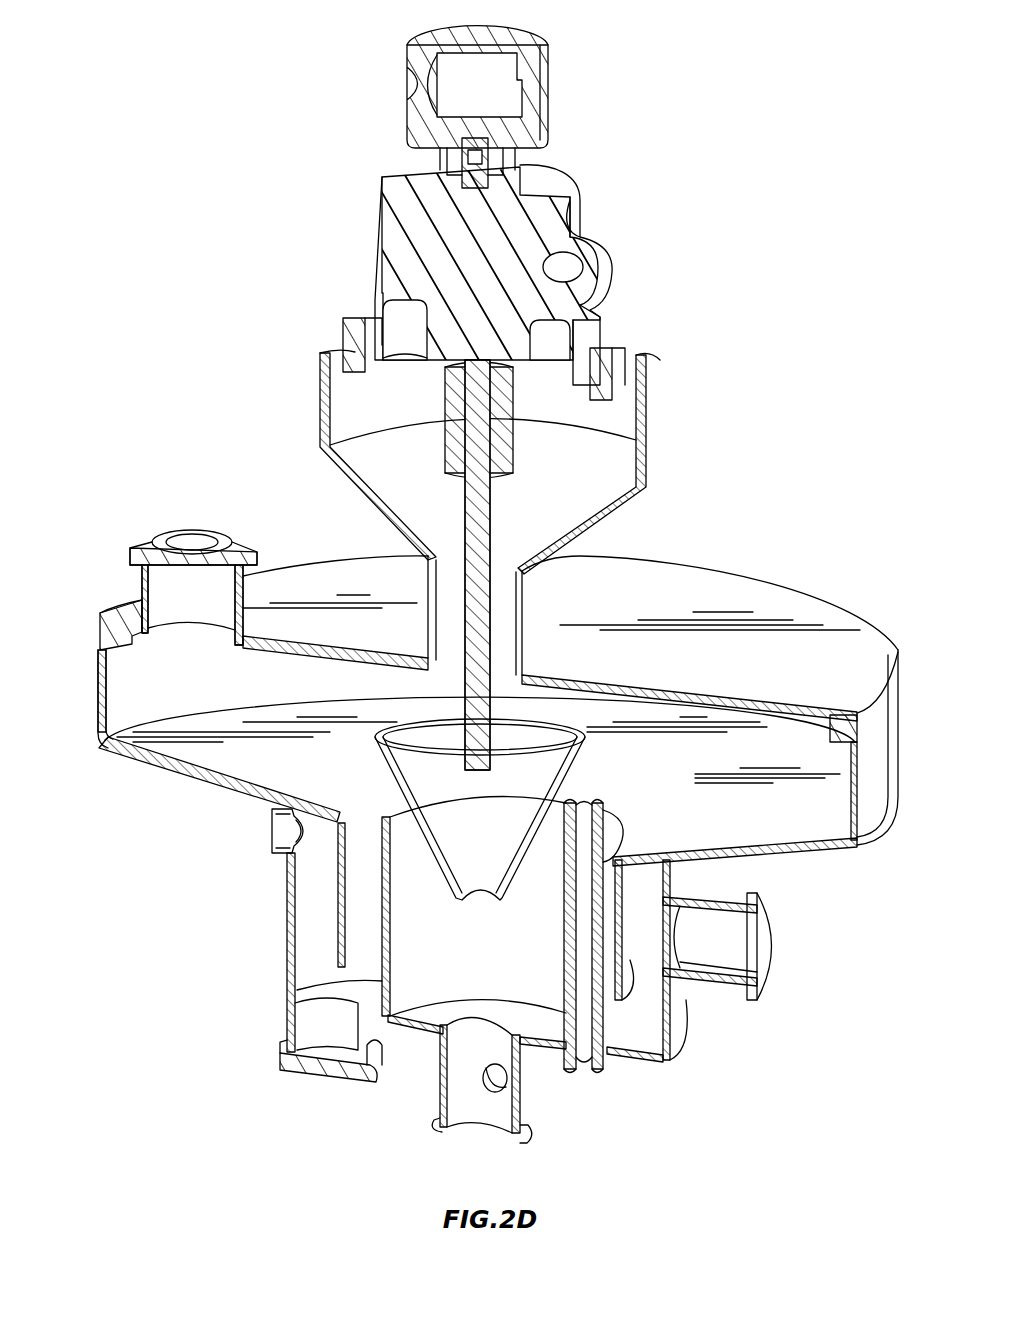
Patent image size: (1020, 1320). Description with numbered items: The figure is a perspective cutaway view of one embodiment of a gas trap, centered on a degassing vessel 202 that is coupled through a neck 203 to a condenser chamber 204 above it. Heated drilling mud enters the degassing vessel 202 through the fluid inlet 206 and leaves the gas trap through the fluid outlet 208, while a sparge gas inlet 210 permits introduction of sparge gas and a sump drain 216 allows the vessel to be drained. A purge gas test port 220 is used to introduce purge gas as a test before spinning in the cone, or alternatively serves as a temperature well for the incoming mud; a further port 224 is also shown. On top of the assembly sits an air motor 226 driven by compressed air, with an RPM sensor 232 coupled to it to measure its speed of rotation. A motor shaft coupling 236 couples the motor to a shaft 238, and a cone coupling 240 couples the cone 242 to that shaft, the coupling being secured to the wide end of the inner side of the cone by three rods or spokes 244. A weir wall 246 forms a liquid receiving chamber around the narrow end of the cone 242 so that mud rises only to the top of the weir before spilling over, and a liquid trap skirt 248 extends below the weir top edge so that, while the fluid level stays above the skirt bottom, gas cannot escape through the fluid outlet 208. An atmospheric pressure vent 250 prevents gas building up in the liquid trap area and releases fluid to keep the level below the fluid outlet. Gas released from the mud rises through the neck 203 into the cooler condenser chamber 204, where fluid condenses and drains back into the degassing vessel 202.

The degassing vessel 202 is at (832, 613).
The neck 203 is at (542, 598).
The condenser chamber 204 is at (648, 438).
The fluid inlet 206 is at (501, 1091).
The fluid outlet 208 is at (713, 900).
The sparge gas inlet 210 is at (606, 1062).
The sump drain 216 is at (287, 1013).
The purge gas test port 220 is at (508, 1078).
The inlet port 224 is at (148, 598).
The air motor 226 is at (590, 202).
The RPM sensor 232 is at (548, 124).
The motor shaft coupling 236 is at (518, 442).
The shaft 238 is at (492, 498).
The cone coupling 240 is at (572, 680).
The cone 242 is at (585, 768).
The spokes 244 is at (418, 738).
The weir wall 246 is at (382, 900).
The liquid trap skirt 248 is at (338, 933).
The atmospheric pressure vent 250 is at (272, 850).